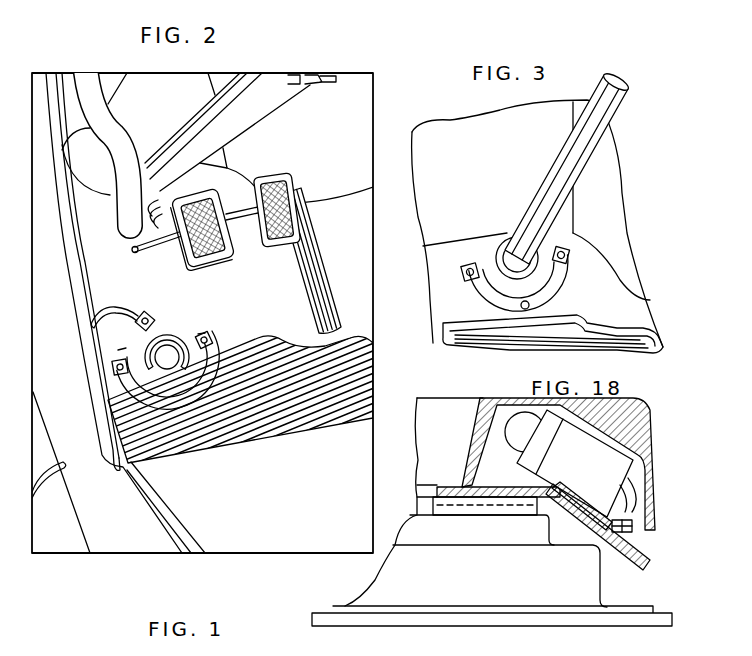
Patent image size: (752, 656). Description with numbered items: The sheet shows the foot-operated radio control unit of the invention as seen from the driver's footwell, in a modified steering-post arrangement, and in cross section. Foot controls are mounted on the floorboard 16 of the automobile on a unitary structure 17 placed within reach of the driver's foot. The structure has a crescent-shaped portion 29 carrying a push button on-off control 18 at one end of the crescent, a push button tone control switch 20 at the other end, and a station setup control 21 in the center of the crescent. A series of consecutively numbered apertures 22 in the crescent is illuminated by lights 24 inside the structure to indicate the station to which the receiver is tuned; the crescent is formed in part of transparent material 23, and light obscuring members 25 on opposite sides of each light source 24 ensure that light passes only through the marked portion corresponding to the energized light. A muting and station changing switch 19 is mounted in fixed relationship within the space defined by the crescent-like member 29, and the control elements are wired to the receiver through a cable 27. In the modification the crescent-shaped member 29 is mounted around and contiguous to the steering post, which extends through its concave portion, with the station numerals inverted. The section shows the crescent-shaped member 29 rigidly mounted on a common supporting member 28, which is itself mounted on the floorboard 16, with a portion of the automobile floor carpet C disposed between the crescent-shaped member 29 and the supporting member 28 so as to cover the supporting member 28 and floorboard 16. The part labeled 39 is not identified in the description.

In FIG. 2, the floorboard 16 is at (243, 299).
In FIG. 3, the floorboard 16 is at (455, 314).
In FIG. 18, the floorboard 16 is at (544, 618).
In FIG. 2, the unitary structure 17 is at (180, 320).
In FIG. 2, the on-off control 18 is at (130, 339).
In FIG. 3, the on-off control 18 is at (468, 263).
In FIG. 2, the muting and station changing switch 19 is at (213, 346).
In FIG. 2, the tone control switch 20 is at (214, 331).
In FIG. 3, the tone control switch 20 is at (569, 252).
In FIG. 2, the station setup control 21 is at (143, 313).
In FIG. 3, the station setup control 21 is at (532, 305).
In FIG. 2, the consecutively numbered apertures 22 is at (125, 348).
In FIG. 18, the transparent material 23 is at (507, 398).
In FIG. 18, the lights 24 is at (520, 445).
In FIG. 18, the light obscuring members 25 is at (500, 453).
In FIG. 2, the cable 27 is at (112, 316).
In FIG. 18, the supporting member 28 is at (592, 586).
In FIG. 2, the crescent-shaped portion 29 is at (167, 316).
In FIG. 3, the crescent-shaped portion 29 is at (503, 307).
In FIG. 18, the crescent-shaped portion 29 is at (638, 405).
In FIG. 18, the bracket 39 is at (627, 499).
In FIG. 18, the automobile floor carpet C is at (645, 556).